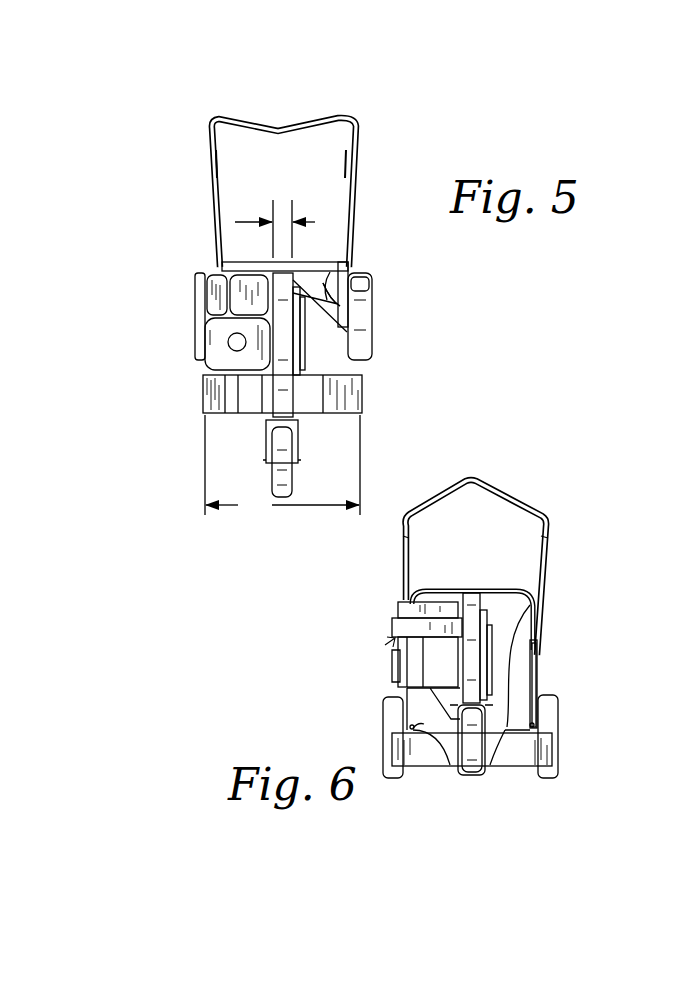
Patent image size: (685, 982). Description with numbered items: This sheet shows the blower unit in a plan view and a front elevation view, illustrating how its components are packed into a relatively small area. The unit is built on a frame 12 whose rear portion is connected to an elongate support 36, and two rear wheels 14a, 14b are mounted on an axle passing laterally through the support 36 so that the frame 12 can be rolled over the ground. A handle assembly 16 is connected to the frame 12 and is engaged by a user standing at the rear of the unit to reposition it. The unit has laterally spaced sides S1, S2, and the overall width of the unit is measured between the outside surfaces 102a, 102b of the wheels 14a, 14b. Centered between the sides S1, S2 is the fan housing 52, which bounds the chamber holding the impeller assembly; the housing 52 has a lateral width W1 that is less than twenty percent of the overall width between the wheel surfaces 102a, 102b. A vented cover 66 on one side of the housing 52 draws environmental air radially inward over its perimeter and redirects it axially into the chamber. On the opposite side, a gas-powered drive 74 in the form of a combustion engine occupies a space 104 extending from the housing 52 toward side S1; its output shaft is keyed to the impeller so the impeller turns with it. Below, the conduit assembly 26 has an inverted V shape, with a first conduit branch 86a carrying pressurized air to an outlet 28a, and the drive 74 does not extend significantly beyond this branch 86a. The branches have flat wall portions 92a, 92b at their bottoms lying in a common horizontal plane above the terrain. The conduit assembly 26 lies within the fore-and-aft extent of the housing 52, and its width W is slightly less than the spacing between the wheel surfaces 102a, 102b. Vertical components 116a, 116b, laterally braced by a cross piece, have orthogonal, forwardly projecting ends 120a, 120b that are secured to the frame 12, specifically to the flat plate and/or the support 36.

In FIG. 5, the handle assembly 16 is at (364, 181).
In FIG. 6, the handle assembly 16 is at (546, 494).
In FIG. 5, the frame 12 is at (326, 352).
In FIG. 6, the frame 12 is at (507, 727).
In FIG. 5, the housing 52 is at (286, 289).
In FIG. 6, the housing 52 is at (481, 582).
In FIG. 5, the rear wheel 14a is at (194, 297).
In FIG. 5, the rear wheel 14b is at (373, 322).
In FIG. 5, the outside surface of wheel 102a is at (194, 320).
In FIG. 5, the outside surface of wheel 102b is at (373, 293).
In FIG. 5, the gas-powered drive 74 is at (212, 344).
In FIG. 6, the gas-powered drive 74 is at (394, 600).
In FIG. 5, the outlet 28a is at (202, 378).
In FIG. 5, the first conduit branch 86a is at (203, 390).
In FIG. 5, the space 104 is at (248, 390).
In FIG. 6, the space 104 is at (440, 722).
In FIG. 5, the conduit assembly 26 is at (325, 418).
In FIG. 6, the conduit assembly 26 is at (497, 772).
In FIG. 5, the forwardly projecting end 120b is at (340, 268).
In FIG. 6, the forwardly projecting end 120b is at (531, 723).
In FIG. 6, the forwardly projecting end 120a is at (422, 722).
In FIG. 6, the vertical component 116a is at (407, 693).
In FIG. 6, the vertical component 116b is at (537, 670).
In FIG. 6, the vented cover 66 is at (493, 640).
In FIG. 6, the flat wall portion 92a is at (430, 768).
In FIG. 6, the flat wall portion 92b is at (532, 767).
In FIG. 6, the elongate support 36 is at (521, 735).
In FIG. 5, the side S1 is at (162, 343).
In FIG. 5, the side S2 is at (380, 345).
In FIG. 5, the width of conduit assembly W is at (282, 465).
In FIG. 5, the lateral width of impeller assembly and housing W1 is at (272, 229).